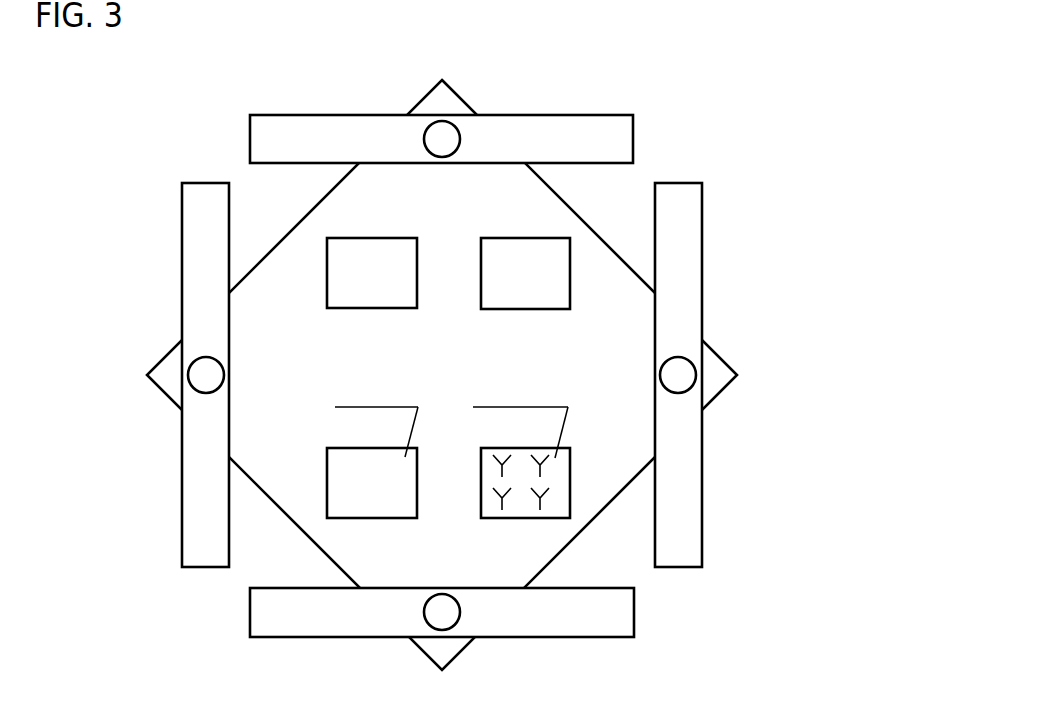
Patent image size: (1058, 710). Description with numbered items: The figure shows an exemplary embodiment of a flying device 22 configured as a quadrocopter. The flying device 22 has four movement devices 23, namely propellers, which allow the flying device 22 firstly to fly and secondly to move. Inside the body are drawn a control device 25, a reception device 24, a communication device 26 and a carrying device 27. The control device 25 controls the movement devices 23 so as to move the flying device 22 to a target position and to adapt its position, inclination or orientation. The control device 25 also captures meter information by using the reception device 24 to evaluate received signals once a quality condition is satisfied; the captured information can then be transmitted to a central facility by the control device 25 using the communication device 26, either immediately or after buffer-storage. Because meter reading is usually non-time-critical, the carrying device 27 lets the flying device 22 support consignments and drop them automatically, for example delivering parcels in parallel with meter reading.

The flying device 22 is at (540, 214).
The movement device 23 is at (440, 138).
The reception device 24 is at (570, 482).
The control device 25 is at (373, 238).
The communication device 26 is at (327, 480).
The carrying device 27 is at (540, 309).